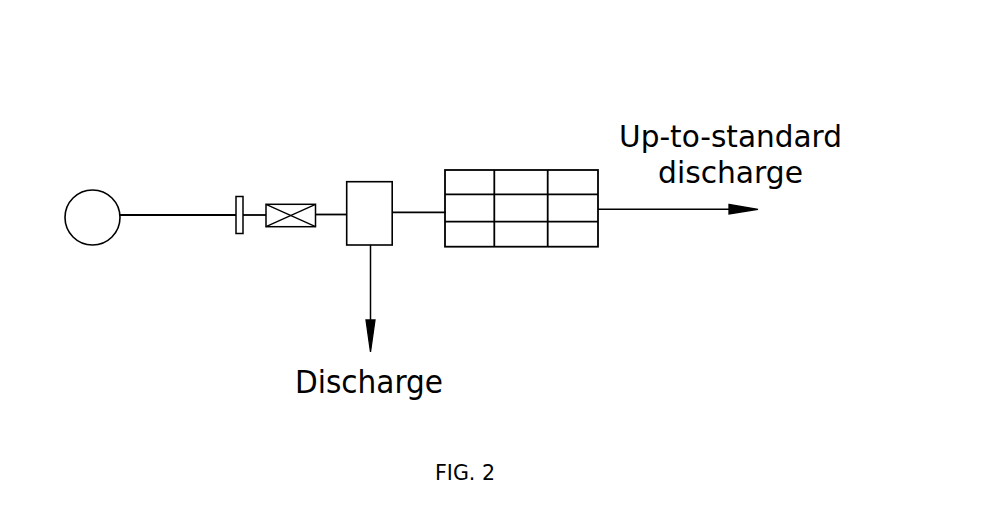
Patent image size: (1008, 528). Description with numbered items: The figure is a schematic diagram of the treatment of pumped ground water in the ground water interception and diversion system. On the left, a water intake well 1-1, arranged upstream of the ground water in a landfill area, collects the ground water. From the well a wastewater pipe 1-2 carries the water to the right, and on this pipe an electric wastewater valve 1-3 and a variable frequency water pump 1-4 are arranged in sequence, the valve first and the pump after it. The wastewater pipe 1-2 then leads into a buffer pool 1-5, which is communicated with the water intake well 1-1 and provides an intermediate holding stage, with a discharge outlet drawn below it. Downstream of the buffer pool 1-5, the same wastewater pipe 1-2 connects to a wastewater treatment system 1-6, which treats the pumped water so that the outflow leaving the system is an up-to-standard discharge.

The water intake well 1-1 is at (114, 179).
The wastewater pipe 1-2 is at (178, 251).
The electric wastewater valve 1-3 is at (274, 251).
The variable frequency water pump 1-4 is at (314, 167).
The buffer pool 1-5 is at (394, 165).
The wastewater treatment system 1-6 is at (521, 160).